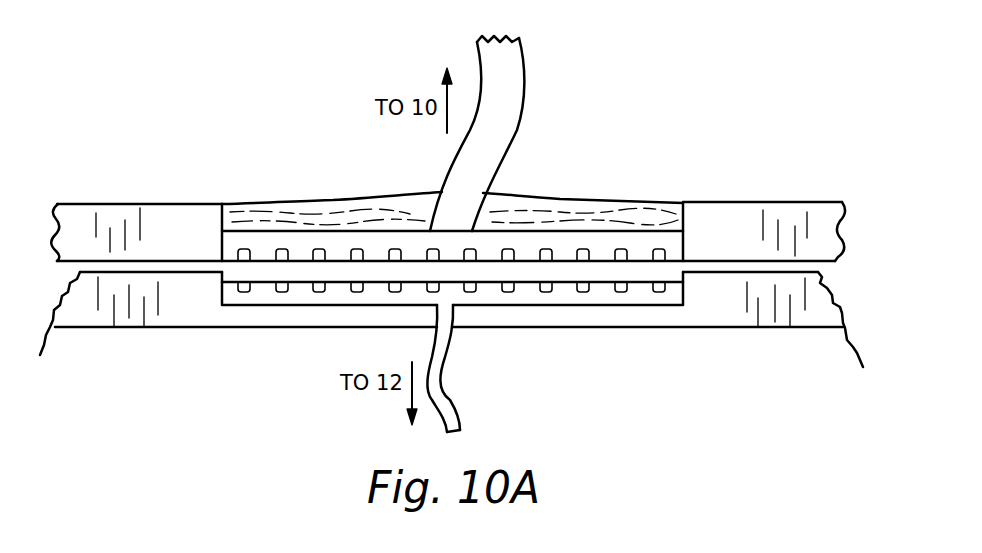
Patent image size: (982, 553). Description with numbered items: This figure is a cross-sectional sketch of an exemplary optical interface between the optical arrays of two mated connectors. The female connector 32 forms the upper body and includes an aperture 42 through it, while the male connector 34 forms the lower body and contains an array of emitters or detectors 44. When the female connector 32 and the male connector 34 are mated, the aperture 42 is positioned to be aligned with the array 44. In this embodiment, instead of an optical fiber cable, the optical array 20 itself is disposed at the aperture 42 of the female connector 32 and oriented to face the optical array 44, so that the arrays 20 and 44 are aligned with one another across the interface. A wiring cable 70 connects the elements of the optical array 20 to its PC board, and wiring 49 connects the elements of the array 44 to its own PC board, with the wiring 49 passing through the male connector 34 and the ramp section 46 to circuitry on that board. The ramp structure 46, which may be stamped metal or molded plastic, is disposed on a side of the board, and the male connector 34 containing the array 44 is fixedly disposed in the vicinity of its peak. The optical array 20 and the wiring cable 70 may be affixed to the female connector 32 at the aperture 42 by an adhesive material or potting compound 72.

The optical array 20 is at (228, 240).
The female connector 32 is at (778, 202).
The male connector 34 is at (840, 305).
The aperture 42 is at (702, 216).
The array of emitters or detectors 44 is at (658, 298).
The ramp structure 46 is at (752, 370).
The wiring 49 is at (448, 368).
The wiring cable 70 is at (520, 127).
The adhesive material or potting compound 72 is at (333, 200).